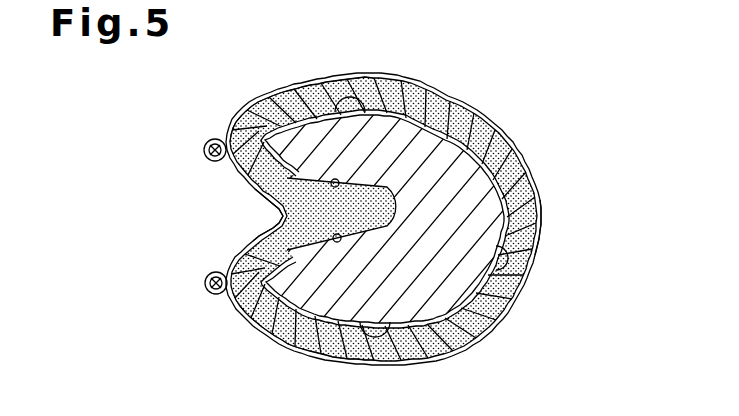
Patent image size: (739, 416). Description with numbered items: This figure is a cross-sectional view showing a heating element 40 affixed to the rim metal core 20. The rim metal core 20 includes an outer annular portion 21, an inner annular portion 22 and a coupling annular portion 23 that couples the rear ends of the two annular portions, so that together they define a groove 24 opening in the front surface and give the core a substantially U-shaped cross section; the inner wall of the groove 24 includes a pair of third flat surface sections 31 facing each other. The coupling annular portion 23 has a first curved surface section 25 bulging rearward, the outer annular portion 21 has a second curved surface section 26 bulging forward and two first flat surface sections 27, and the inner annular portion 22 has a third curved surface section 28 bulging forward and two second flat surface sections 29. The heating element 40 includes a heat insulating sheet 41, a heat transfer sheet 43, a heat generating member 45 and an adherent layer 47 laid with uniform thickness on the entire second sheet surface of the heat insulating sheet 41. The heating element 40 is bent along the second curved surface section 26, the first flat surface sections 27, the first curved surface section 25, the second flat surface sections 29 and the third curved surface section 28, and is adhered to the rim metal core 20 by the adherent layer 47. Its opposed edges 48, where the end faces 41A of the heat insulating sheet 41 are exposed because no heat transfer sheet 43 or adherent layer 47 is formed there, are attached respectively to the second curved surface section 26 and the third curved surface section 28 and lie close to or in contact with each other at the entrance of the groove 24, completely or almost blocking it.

The rim metal core 20 is at (535, 226).
The coupling annular portion 23 is at (538, 227).
The outer annular portion 21 is at (276, 93).
The inner annular portion 22 is at (268, 346).
The groove 24 is at (392, 215).
The first curved surface section 25 is at (537, 191).
The second curved surface section 26 is at (236, 121).
The first flat surface sections 27 is at (360, 74).
The third curved surface section 28 is at (238, 324).
The second flat surface sections 29 is at (362, 365).
The third flat surface sections 31 is at (335, 179).
The heating element 40 is at (540, 249).
The heat insulating sheet 41 is at (507, 300).
The end faces 41A is at (304, 197).
The heat transfer sheet 43 is at (490, 319).
The heat generating member 45 is at (204, 151).
The adherent layer 47 is at (523, 277).
The opposed edges 48 is at (244, 197).